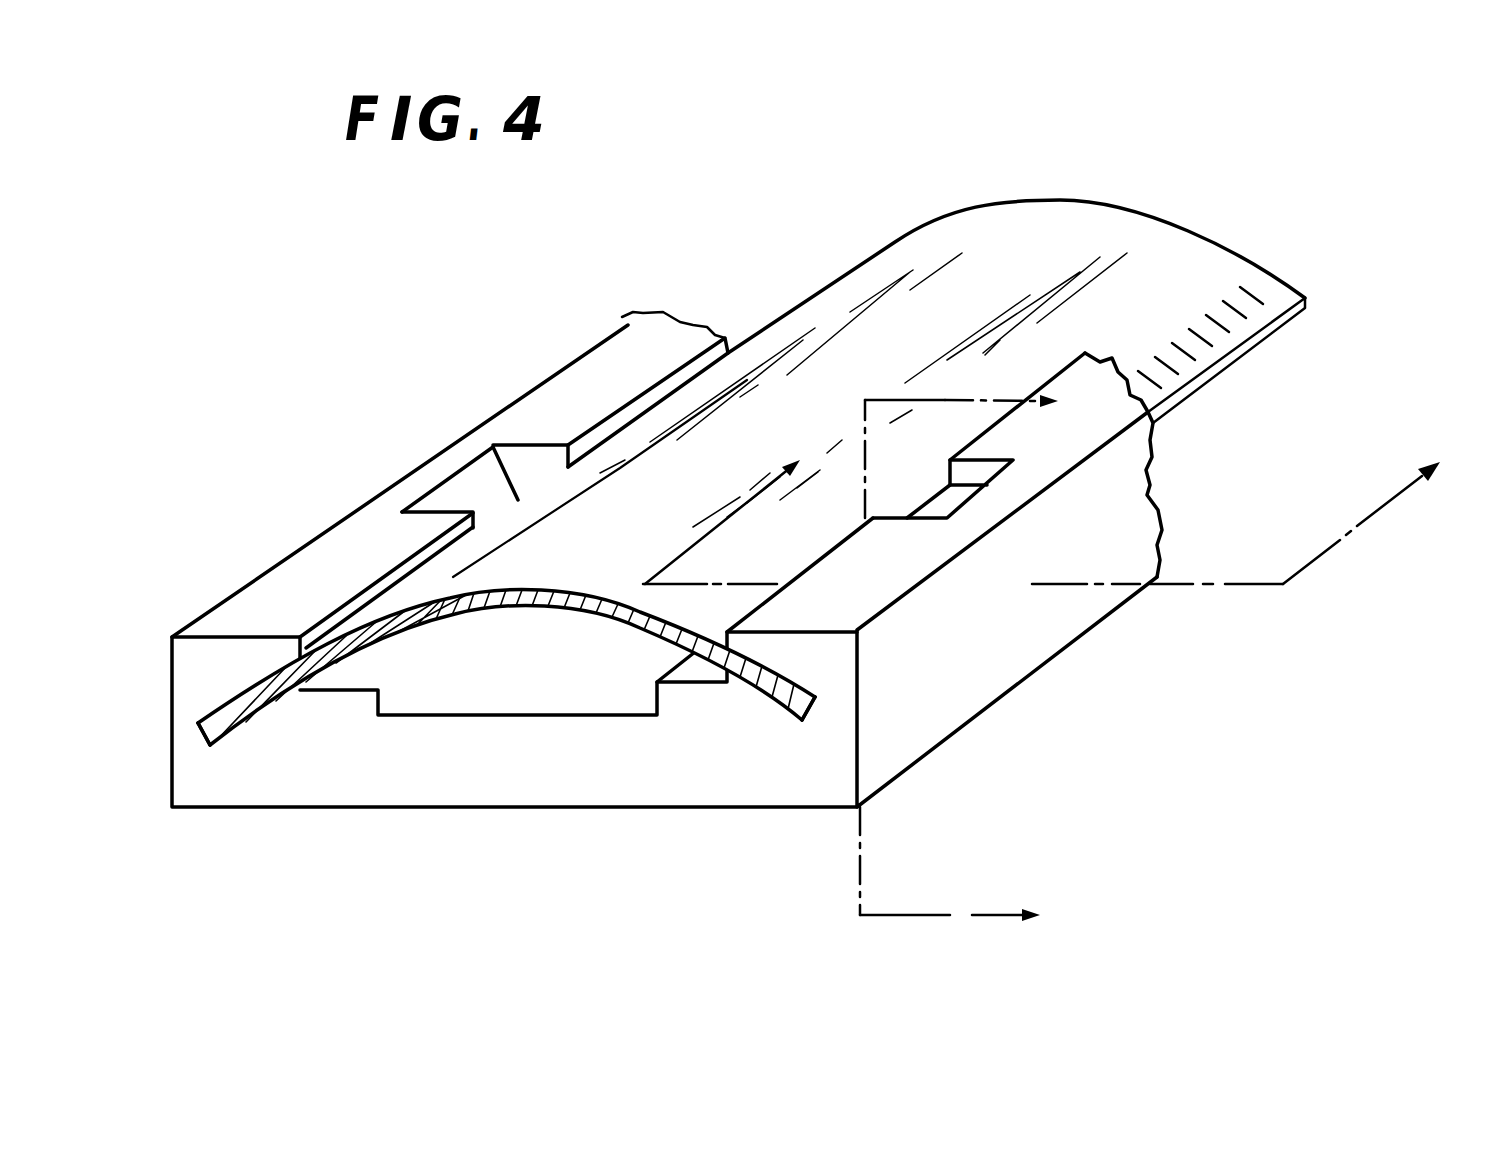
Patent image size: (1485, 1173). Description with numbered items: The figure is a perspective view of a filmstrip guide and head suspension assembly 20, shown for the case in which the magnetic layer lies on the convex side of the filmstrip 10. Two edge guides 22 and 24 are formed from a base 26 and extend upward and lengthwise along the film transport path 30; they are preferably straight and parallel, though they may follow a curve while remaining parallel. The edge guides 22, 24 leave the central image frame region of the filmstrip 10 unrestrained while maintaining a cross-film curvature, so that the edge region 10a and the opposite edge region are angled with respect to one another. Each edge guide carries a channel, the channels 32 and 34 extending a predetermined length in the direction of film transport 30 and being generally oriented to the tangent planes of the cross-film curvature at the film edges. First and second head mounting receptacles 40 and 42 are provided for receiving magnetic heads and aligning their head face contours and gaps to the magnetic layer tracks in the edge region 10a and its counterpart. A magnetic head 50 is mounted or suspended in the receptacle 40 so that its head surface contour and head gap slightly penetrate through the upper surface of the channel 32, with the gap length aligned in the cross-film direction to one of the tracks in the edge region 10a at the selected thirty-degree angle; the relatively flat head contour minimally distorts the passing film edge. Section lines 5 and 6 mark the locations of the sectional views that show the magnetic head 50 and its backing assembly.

The filmstrip 10 is at (982, 227).
The edge region 10a is at (1253, 325).
The filmstrip guide and head suspension assembly 20 is at (975, 790).
The edge guide 22 is at (995, 668).
The edge guide 24 is at (628, 332).
The base 26 is at (530, 777).
The film transport path 30 is at (1223, 133).
The channel 32 is at (781, 705).
The channel 34 is at (225, 735).
The first head mounting receptacle 40 is at (1007, 458).
The second head mounting receptacle 42 is at (492, 472).
The magnetic head 50 is at (960, 492).
The section line 5- 5 is at (1054, 501).
The section line 6- 6 is at (972, 663).